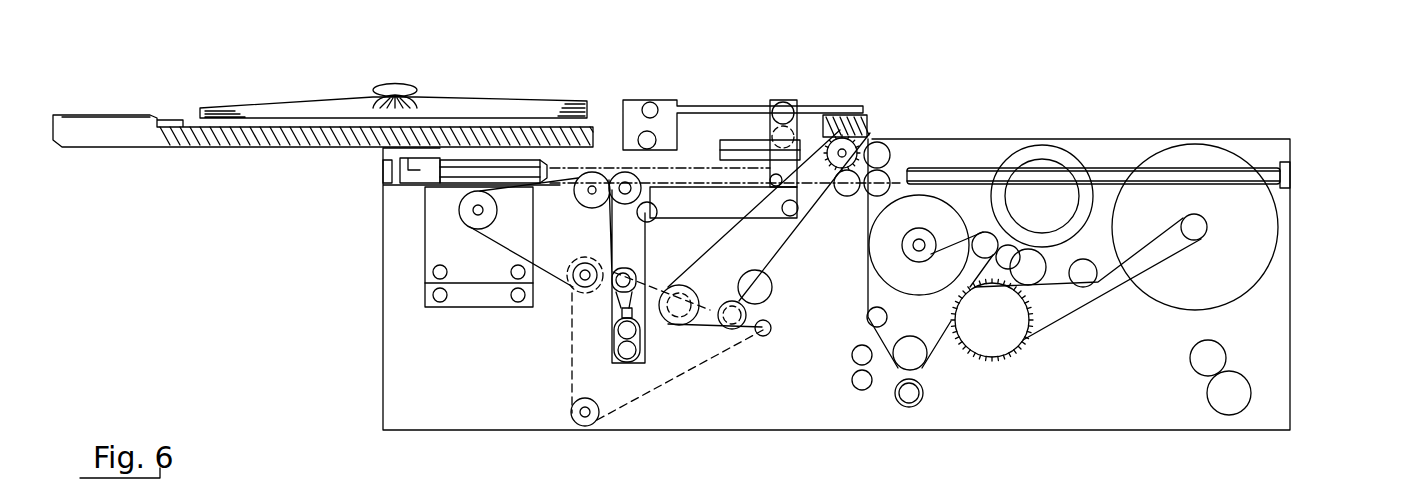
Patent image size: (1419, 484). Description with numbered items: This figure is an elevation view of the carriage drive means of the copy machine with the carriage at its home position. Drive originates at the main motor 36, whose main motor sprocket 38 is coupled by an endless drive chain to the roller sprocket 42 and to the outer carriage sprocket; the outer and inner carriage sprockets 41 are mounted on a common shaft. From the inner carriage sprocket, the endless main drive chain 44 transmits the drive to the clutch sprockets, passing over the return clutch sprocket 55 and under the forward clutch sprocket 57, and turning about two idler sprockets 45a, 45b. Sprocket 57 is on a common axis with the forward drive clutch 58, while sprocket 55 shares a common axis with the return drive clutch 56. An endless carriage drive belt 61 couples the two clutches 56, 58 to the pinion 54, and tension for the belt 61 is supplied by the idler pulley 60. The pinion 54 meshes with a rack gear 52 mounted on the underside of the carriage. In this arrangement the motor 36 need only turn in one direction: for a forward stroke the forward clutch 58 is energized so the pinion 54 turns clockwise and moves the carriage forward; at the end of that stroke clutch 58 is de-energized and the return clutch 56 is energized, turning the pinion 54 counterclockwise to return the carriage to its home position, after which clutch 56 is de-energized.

The main motor 36 is at (433, 213).
The main motor sprocket 38 is at (467, 222).
The carriage sprockets 41 is at (583, 287).
The roller sprocket 42 is at (583, 207).
The main drive chain 44 is at (735, 353).
The idler sprocket 45a is at (765, 333).
The idler sprocket 45b is at (593, 420).
The rack gear 52 is at (870, 137).
The pinion 54 is at (890, 153).
The return clutch sprocket 55 is at (692, 320).
The return drive clutch 56 is at (673, 323).
The forward clutch sprocket 57 is at (745, 317).
The forward drive clutch 58 is at (740, 323).
The idler pulley 60 is at (773, 283).
The carriage drive belt 61 is at (816, 153).